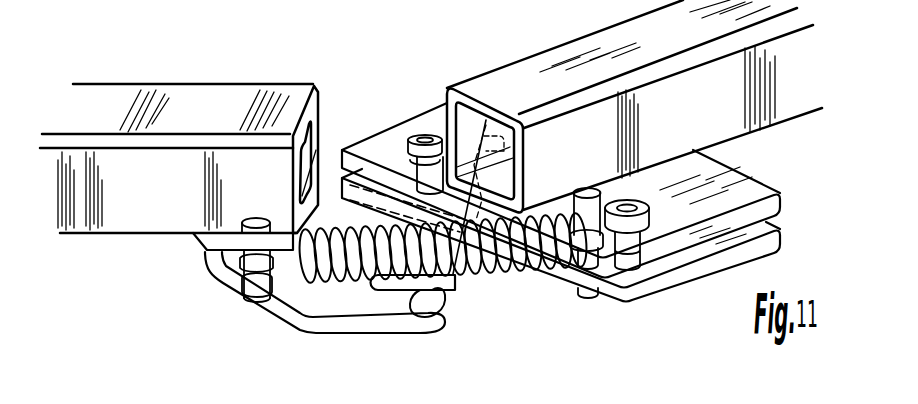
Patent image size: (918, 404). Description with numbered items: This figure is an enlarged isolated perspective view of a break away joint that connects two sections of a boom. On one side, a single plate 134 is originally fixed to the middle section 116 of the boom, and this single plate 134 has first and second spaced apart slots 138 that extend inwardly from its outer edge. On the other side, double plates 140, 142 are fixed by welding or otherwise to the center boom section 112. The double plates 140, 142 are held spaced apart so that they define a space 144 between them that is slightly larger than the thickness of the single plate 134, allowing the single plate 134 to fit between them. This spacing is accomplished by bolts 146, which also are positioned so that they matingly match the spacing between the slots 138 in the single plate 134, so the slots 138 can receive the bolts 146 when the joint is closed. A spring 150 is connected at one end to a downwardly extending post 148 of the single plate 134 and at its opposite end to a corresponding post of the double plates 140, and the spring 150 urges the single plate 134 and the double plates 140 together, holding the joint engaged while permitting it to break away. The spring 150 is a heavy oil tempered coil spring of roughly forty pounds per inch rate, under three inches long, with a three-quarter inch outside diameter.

The center boom section 112 is at (245, 97).
The middle section 116 is at (504, 78).
The single plate 134 is at (294, 300).
The slots 138 is at (486, 125).
The double plates 140 is at (784, 230).
The double plates 142 is at (784, 207).
The space 144 is at (783, 242).
The bolts 146 is at (427, 132).
The downwardly extending post 148 is at (240, 299).
The spring 150 is at (513, 265).